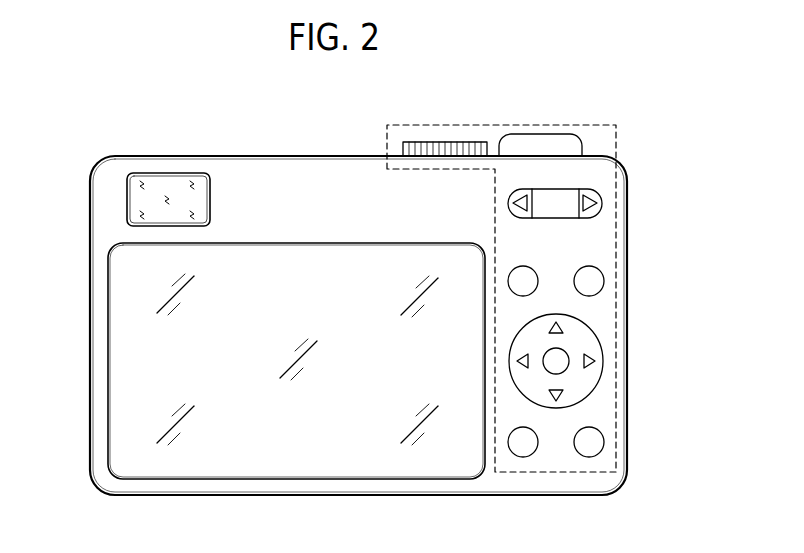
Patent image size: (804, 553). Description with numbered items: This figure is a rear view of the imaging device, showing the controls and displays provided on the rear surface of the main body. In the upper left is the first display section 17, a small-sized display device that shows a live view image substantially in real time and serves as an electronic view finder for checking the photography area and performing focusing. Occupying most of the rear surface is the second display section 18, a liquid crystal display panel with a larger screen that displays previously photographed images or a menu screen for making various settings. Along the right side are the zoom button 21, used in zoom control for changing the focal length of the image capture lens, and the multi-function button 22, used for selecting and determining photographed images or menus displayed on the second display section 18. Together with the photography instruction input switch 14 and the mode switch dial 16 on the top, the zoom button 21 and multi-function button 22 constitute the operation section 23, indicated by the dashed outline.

The photography instruction input switch 14 is at (540, 142).
The mode switch dial 16 is at (440, 147).
The first display section 17 is at (165, 183).
The second display section 18 is at (250, 455).
The zoom button 21 is at (596, 197).
The multi-function button 22 is at (588, 344).
The operation section 23 is at (618, 135).